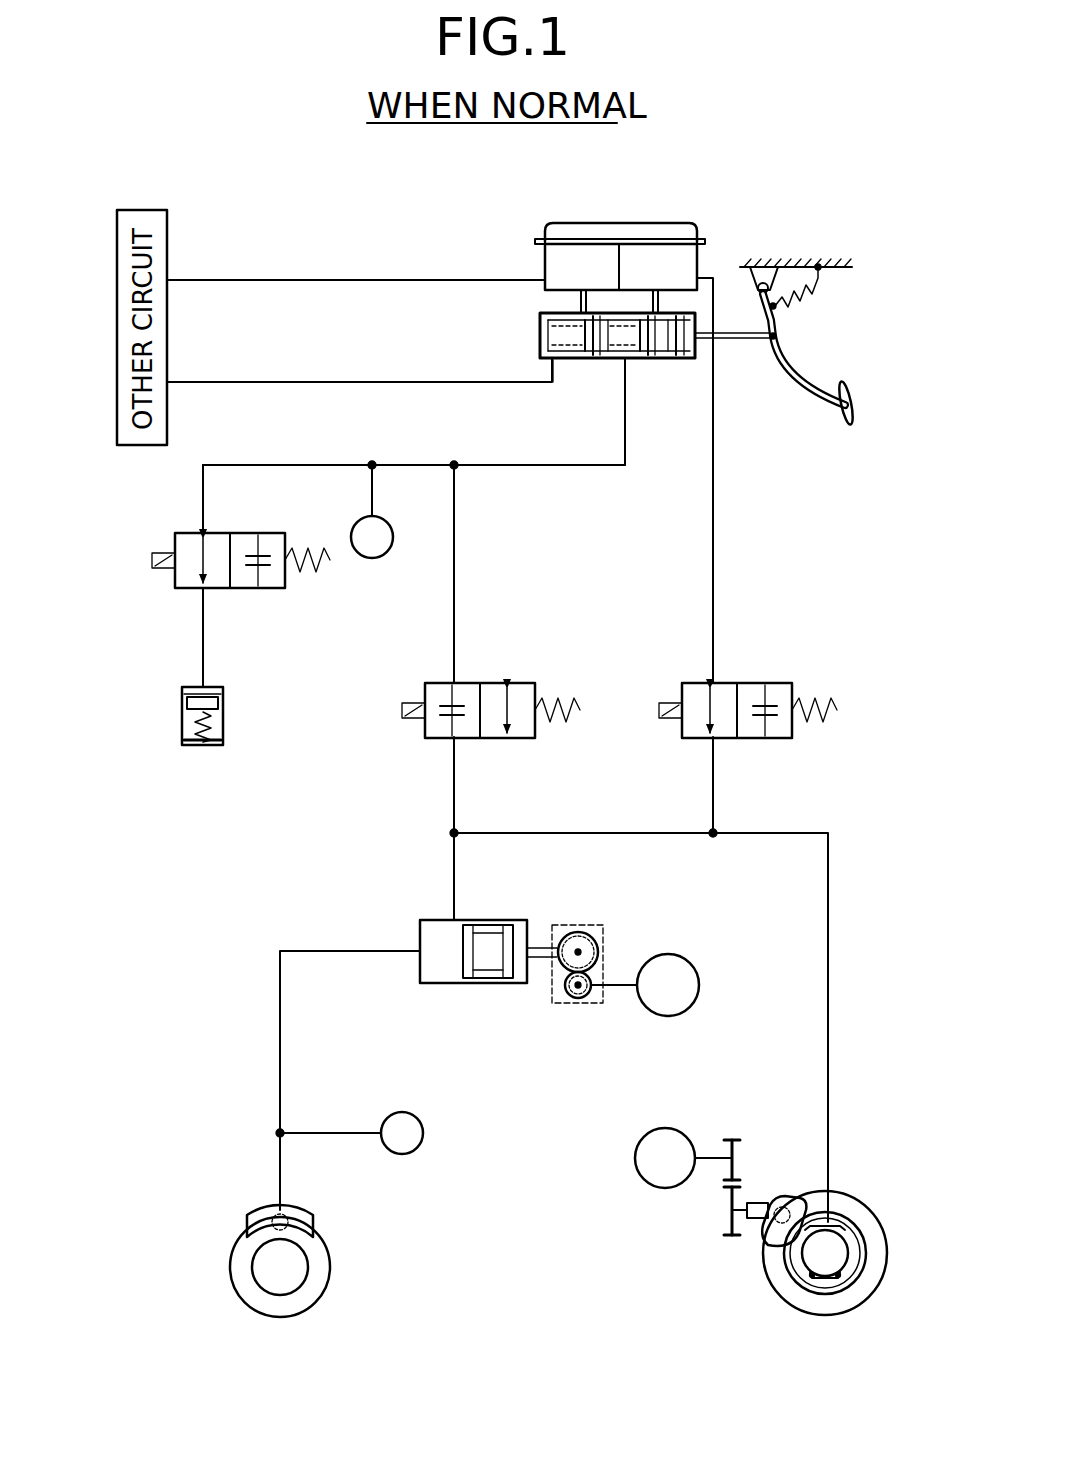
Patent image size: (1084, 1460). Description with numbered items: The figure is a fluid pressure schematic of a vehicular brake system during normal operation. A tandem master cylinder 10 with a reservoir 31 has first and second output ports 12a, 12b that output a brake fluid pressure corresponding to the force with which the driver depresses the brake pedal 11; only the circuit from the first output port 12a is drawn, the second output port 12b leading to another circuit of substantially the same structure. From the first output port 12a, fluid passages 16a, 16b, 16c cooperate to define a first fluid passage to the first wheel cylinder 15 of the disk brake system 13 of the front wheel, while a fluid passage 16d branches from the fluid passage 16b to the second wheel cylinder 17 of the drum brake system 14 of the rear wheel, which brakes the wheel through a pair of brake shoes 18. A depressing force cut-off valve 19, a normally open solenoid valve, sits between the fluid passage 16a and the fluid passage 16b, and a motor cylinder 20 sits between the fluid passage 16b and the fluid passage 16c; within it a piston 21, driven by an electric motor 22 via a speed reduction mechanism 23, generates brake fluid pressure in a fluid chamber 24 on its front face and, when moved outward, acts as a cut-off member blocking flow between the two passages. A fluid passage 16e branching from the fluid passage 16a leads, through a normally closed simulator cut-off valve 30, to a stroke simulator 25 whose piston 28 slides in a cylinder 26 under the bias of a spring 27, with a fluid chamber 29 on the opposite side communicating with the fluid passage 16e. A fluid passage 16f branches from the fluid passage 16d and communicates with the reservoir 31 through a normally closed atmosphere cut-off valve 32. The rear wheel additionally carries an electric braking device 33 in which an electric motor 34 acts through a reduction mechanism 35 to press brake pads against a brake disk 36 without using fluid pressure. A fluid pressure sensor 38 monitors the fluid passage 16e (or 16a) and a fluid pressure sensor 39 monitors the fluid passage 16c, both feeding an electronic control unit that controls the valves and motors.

The tandem master cylinder 10 is at (534, 330).
The brake pedal 11 is at (840, 420).
The first output port 12a is at (627, 362).
The second output port 12b is at (555, 361).
The disk brake system 13 is at (337, 1266).
The drum brake system 14 is at (824, 1257).
The first wheel cylinder 15 is at (268, 1206).
The fluid passage 16a is at (528, 467).
The fluid passage 16b is at (456, 783).
The fluid passage 16c is at (278, 1051).
The fluid passage 16d is at (598, 832).
The fluid passage 16e is at (318, 464).
The fluid passage 16f is at (715, 591).
The second wheel cylinder 17 is at (820, 1218).
The brake shoes 18 is at (800, 1265).
The depressing force cut-off valve 19 is at (437, 745).
The motor cylinder 20 is at (439, 953).
The piston 21 is at (487, 937).
The electric motor 22 is at (695, 996).
The speed reduction mechanism 23 is at (614, 935).
The fluid chamber 24 is at (438, 972).
The stroke simulator 25 is at (185, 718).
The cylinder 26 is at (182, 741).
The spring 27 is at (223, 736).
The piston 28 is at (182, 696).
The fluid chamber 29 is at (212, 690).
The simulator cut-off valve 30 is at (193, 529).
The reservoir 31 is at (540, 250).
The atmosphere cut-off valve 32 is at (684, 689).
The electric braking device 33 is at (699, 1165).
The electric motor 34 is at (642, 1140).
The reduction mechanism 35 is at (746, 1148).
The brake disk 36 is at (820, 1310).
The fluid pressure sensor 38 is at (379, 557).
The fluid pressure sensor 39 is at (422, 1141).